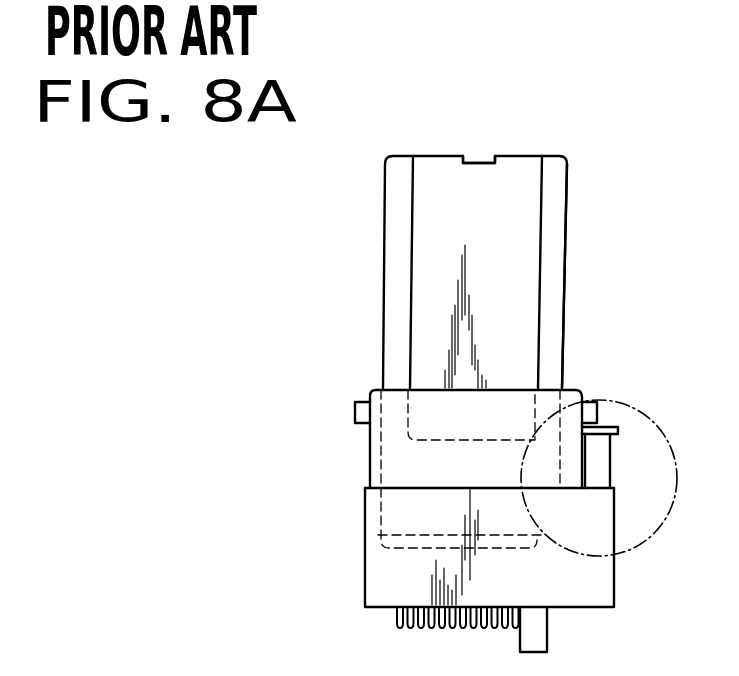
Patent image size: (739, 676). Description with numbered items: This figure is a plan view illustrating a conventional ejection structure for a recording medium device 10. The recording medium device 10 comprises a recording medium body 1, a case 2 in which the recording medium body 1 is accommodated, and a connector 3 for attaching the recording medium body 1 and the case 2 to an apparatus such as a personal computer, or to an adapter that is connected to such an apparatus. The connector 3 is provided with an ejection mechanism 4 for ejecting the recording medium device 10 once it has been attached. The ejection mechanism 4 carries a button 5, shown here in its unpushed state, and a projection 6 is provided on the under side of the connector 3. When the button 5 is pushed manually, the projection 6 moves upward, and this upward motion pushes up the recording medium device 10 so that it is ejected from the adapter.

The recording medium body 1 is at (477, 182).
The recording medium device 10 is at (518, 230).
The case 2 is at (565, 292).
The connector 3 is at (382, 590).
The ejection mechanism 4 is at (648, 540).
The button 5 is at (608, 465).
The projection 6 is at (537, 633).